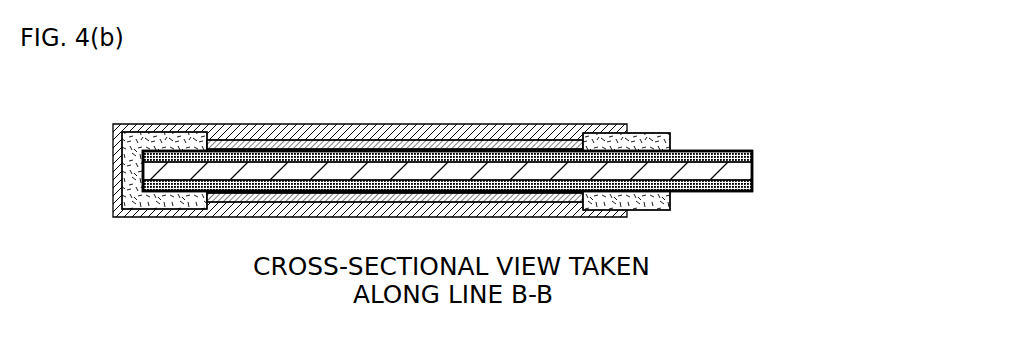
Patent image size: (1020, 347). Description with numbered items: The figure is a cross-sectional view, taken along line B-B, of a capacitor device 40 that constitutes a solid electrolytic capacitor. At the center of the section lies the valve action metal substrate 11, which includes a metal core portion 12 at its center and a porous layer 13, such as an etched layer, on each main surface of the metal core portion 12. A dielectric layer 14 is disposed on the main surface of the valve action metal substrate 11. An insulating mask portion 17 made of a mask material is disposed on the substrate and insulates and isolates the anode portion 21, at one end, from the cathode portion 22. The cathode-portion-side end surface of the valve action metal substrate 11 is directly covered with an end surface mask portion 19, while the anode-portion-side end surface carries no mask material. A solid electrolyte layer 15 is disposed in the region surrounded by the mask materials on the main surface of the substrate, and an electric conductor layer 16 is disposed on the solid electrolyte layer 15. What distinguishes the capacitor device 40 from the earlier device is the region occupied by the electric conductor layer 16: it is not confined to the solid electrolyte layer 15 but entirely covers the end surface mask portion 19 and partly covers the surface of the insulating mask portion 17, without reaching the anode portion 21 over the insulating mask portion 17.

The valve action metal substrate 11 is at (501, 172).
The metal core portion 12 is at (752, 172).
The porous layer 13 is at (752, 153).
The dielectric layer 14 is at (493, 148).
The solid electrolyte layer 15 is at (352, 143).
The electric conductor layer 16 is at (292, 135).
The insulating mask portion 17 is at (612, 140).
The end surface mask portion 19 is at (168, 140).
The anode portion 21 is at (491, 176).
The cathode portion 22 is at (218, 220).
The capacitor device 40 is at (676, 112).